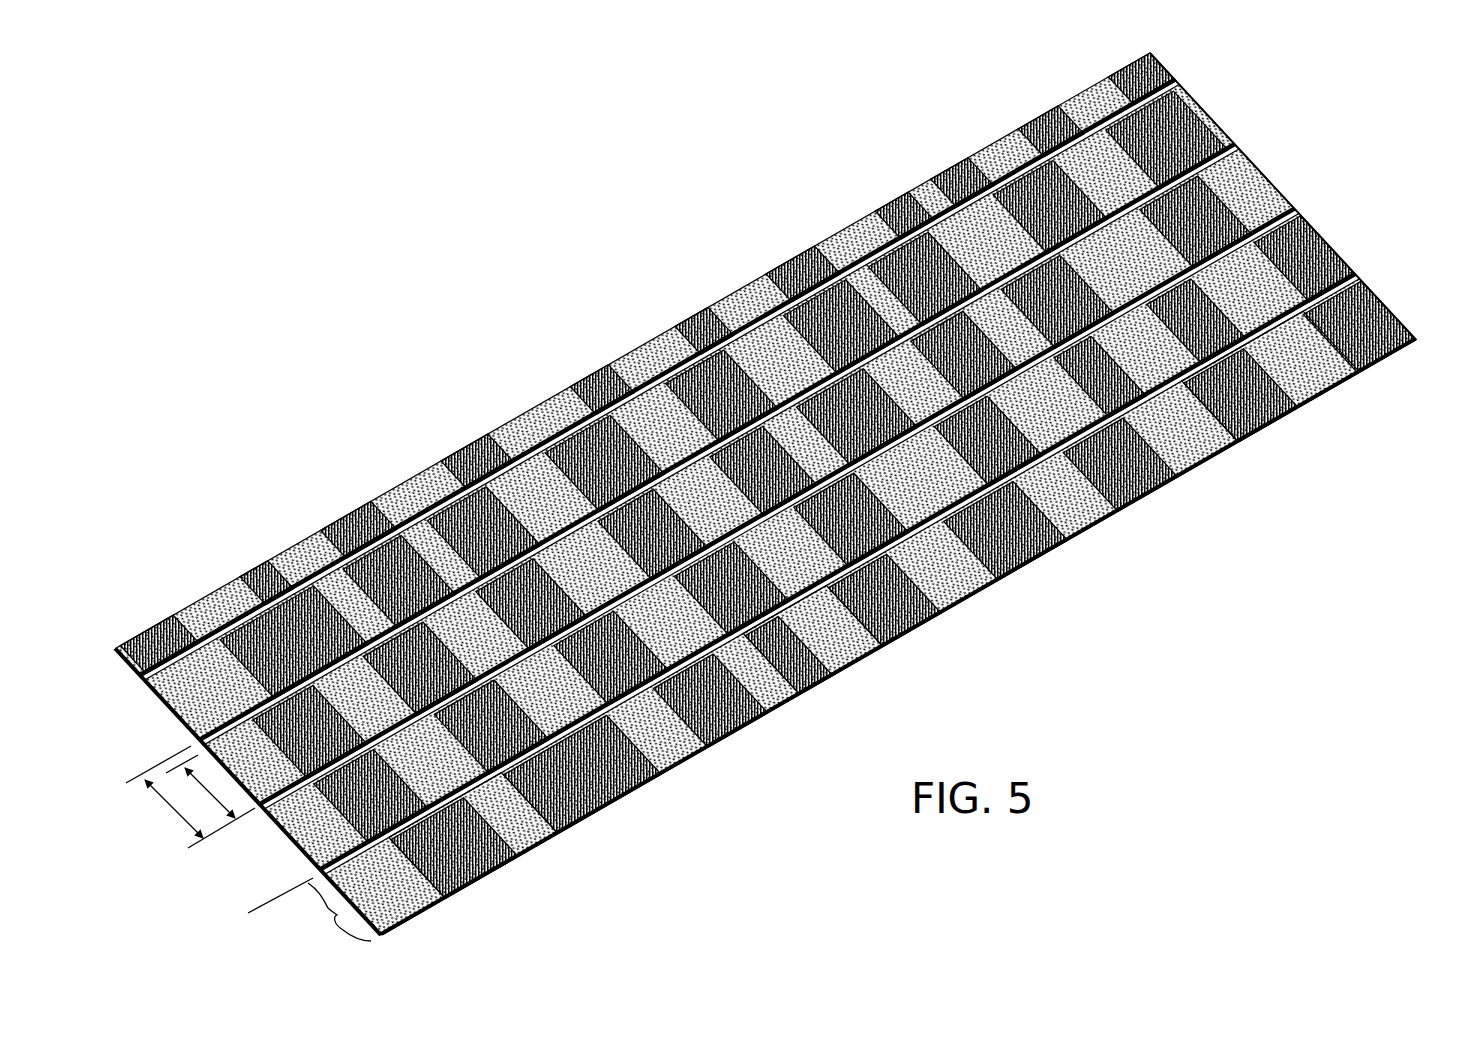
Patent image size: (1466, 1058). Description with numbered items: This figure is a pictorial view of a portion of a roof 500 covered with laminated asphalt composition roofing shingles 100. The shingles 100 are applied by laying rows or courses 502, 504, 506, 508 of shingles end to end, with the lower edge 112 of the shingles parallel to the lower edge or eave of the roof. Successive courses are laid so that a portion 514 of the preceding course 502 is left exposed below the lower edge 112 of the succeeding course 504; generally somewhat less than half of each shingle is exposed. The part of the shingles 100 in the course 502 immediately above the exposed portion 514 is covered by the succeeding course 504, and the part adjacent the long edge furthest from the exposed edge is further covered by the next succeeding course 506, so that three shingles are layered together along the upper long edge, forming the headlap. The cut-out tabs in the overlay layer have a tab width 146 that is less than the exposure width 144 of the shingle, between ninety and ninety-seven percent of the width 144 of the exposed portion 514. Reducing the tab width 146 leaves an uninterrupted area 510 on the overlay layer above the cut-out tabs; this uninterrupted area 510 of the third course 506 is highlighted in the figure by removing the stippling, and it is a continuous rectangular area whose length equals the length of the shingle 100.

The laminated asphalt composition roofing shingle 100 is at (1365, 342).
The lower edge 112 is at (273, 888).
The exposure width 144 is at (162, 802).
The tab width 146 is at (200, 785).
The roof 500 is at (786, 494).
The first course 502 is at (1407, 283).
The second course 504 is at (1345, 217).
The third course 506 is at (1280, 153).
The fourth course 508 is at (1222, 88).
The uninterrupted area 510 is at (1230, 140).
The exposed portion 514 is at (327, 906).